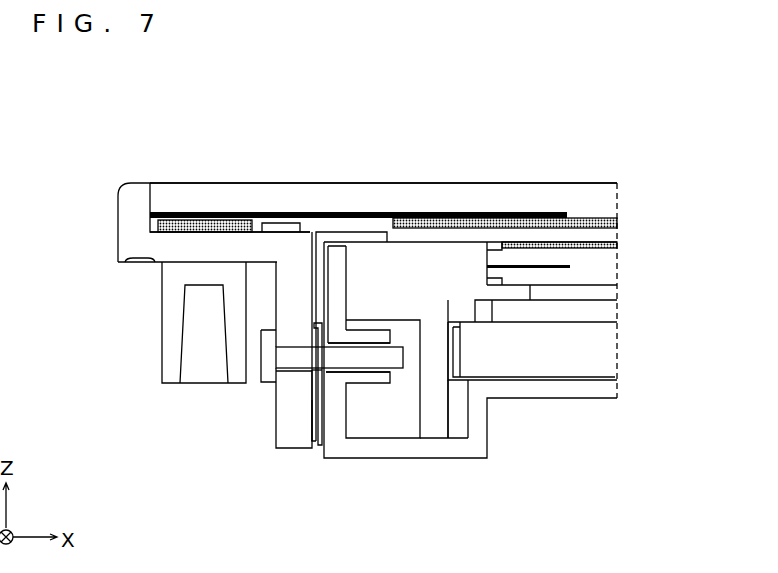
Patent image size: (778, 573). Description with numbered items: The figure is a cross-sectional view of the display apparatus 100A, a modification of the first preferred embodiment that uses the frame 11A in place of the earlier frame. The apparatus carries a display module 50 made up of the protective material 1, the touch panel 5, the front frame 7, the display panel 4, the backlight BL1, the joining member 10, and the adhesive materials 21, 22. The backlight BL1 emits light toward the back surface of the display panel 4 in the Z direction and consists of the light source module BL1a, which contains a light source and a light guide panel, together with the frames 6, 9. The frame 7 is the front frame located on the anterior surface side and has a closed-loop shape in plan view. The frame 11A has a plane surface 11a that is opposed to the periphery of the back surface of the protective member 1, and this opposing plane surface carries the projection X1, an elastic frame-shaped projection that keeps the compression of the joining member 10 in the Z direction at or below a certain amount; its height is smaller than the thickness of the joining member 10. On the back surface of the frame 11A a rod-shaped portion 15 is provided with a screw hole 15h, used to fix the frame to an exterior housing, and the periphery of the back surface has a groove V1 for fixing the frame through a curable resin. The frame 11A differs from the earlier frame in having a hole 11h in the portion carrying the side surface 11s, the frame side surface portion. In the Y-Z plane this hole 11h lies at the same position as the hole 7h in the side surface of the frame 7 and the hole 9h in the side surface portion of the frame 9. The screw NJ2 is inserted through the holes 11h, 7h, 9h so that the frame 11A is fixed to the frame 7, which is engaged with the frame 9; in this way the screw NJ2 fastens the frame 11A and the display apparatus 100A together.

The display apparatus 100A is at (253, 118).
The frame 11A is at (143, 182).
The display module 50 is at (256, 175).
The protective material 1 is at (613, 192).
The adhesive material 21 is at (613, 214).
The touch panel 5 is at (613, 230).
The adhesive material 22 is at (618, 243).
The joining member 10 is at (149, 226).
The projection X1 is at (282, 222).
The plane surface 11a is at (211, 243).
The groove V1 is at (146, 270).
The rod-shaped portion 15 is at (161, 340).
The hole 15h is at (204, 397).
The frame 7 is at (358, 232).
The hole 11h is at (291, 385).
The side surface 11s is at (306, 435).
The screw NJ2 is at (265, 387).
The frame 9 is at (620, 395).
The hole 9h is at (366, 379).
The hole 7h is at (330, 380).
The light source module BL1a is at (620, 300).
The frame 6 is at (517, 294).
The display panel 4 is at (618, 247).
The backlight BL1 is at (687, 281).